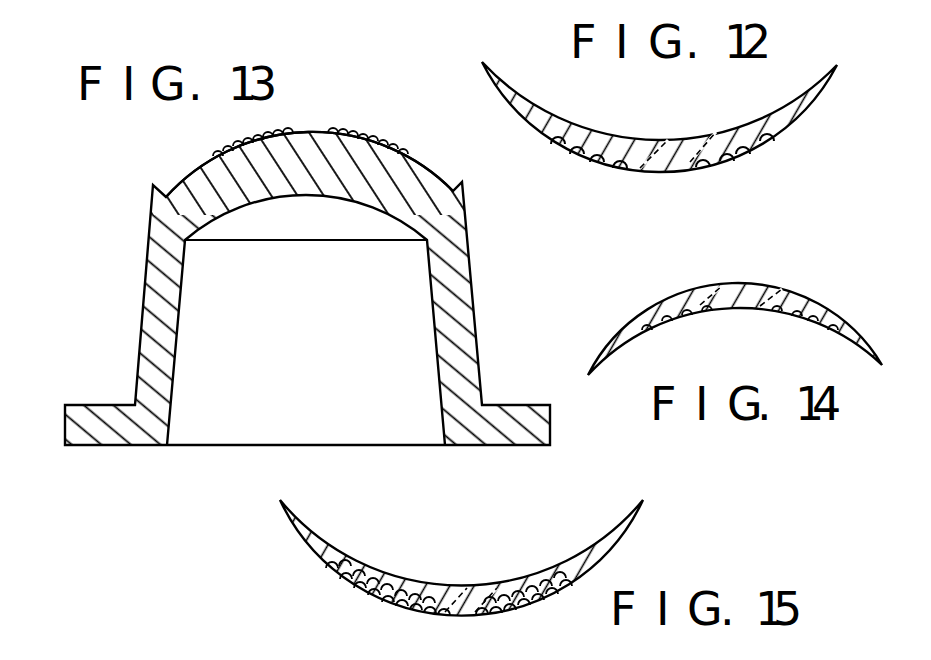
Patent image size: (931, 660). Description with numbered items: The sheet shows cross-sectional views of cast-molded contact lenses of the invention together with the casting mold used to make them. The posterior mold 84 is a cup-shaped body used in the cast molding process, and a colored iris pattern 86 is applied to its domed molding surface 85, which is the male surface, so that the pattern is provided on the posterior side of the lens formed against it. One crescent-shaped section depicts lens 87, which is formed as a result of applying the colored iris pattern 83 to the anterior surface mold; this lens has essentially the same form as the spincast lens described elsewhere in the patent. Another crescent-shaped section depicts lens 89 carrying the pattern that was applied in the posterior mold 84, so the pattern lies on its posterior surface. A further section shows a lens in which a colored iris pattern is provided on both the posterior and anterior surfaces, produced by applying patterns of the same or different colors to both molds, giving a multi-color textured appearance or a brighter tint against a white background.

In FIG. 12, the colored iris pattern 83 is at (736, 153).
In FIG. 13, the posterior mold 84 is at (440, 177).
In FIG. 13, the molding surface 85 is at (430, 171).
In FIG. 13, the colored iris pattern 86 is at (357, 130).
In FIG. 14, the colored iris pattern 86 is at (776, 312).
In FIG. 12, the lens 87 is at (652, 147).
In FIG. 14, the lens 89 is at (681, 298).